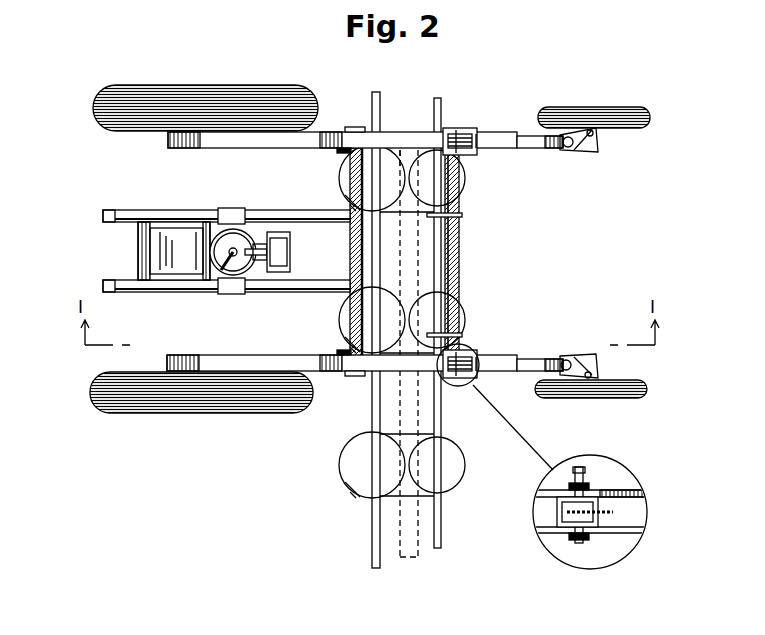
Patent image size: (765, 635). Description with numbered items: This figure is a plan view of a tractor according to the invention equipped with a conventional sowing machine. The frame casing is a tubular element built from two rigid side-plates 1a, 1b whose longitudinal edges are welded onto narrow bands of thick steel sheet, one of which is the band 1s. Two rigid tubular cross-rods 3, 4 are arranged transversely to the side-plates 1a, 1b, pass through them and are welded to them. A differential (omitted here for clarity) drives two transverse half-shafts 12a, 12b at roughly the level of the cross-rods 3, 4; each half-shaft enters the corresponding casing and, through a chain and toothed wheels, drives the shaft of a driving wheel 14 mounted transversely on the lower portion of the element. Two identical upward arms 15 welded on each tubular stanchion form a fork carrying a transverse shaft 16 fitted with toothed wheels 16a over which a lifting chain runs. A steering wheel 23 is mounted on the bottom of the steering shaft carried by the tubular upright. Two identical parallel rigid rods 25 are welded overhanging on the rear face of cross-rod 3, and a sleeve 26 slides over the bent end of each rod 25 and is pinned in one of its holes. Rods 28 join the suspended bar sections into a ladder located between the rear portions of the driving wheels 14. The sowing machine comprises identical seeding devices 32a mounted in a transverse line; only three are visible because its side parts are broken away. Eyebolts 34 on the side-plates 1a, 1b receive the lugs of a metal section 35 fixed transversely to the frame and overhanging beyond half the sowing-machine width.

The side-plate 1a is at (326, 131).
The side-plate 1b is at (296, 148).
The narrow band 1s is at (277, 145).
The cross-rod 3 is at (350, 190).
The cross-rod 4 is at (460, 254).
The half-shaft 12a is at (440, 337).
The half-shaft 12b is at (436, 215).
The driving wheel 14 is at (145, 414).
The arm 15 is at (597, 535).
The transverse shaft 16 is at (447, 277).
The toothed wheel 16a is at (560, 517).
The steering wheel 23 is at (605, 107).
The rigid rod 25 is at (320, 280).
The sleeve 26 is at (235, 210).
The rod 28 is at (138, 250).
The seeding device 32a is at (465, 180).
The eyebolt 34 is at (398, 157).
The metal section 35 is at (412, 248).